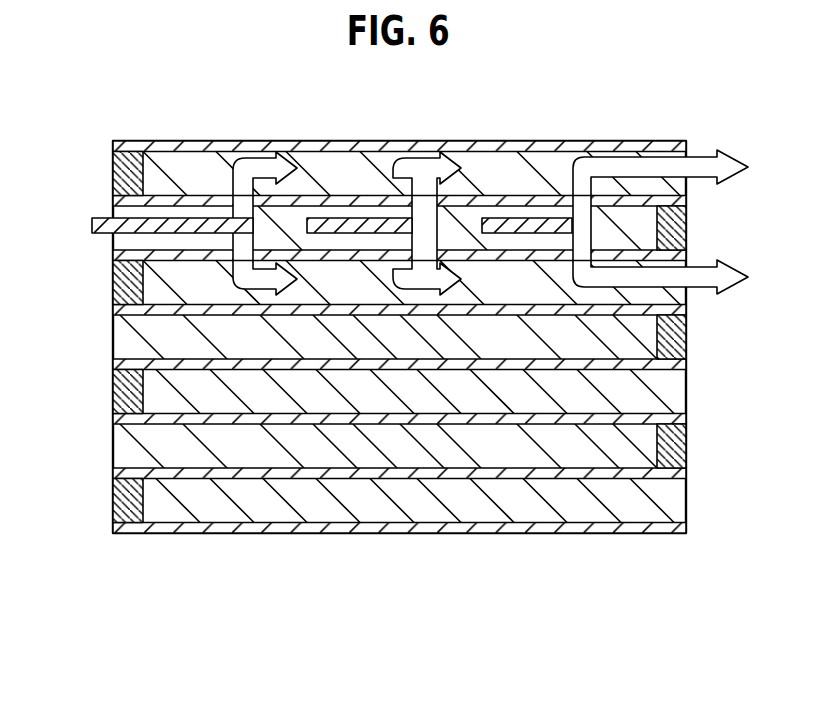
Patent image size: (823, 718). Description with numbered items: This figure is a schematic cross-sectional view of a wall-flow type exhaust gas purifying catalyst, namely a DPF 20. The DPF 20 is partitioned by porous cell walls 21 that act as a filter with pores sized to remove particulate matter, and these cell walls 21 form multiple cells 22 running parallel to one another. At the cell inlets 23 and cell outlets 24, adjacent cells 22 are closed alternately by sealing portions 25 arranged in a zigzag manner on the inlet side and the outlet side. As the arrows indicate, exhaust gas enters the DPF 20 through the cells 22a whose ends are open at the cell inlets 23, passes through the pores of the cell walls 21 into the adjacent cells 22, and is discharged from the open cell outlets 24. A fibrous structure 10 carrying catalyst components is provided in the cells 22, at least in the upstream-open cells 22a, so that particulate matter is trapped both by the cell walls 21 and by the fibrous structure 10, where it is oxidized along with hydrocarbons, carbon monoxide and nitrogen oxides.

The fibrous structure 10 is at (217, 440).
The DPF 20 is at (442, 535).
The cell walls 21 is at (479, 139).
The cells 22 is at (320, 184).
The cells having open ends provided upstream 22a is at (115, 243).
The cell inlets 23 is at (113, 286).
The cell outlets 24 is at (687, 340).
The sealing portions 25 is at (115, 170).